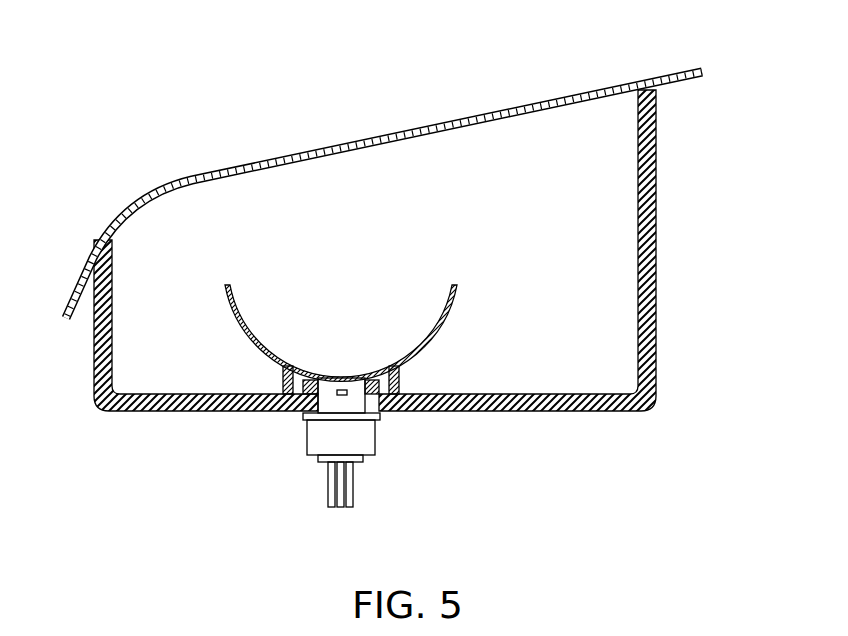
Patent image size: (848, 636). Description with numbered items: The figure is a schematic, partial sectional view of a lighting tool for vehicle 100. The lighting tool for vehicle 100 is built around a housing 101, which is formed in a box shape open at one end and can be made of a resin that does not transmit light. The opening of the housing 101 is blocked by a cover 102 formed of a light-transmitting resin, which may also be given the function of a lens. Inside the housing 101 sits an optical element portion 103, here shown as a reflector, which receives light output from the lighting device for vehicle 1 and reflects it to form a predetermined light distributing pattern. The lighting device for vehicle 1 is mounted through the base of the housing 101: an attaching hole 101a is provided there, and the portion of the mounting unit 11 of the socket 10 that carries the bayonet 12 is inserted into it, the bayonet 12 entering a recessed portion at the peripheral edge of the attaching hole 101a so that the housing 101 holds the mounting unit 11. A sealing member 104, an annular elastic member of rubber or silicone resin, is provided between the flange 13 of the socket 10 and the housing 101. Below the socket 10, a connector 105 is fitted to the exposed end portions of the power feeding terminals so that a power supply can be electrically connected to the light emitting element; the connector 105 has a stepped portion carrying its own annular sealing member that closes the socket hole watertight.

The lighting tool for vehicle 100 is at (728, 70).
The housing 101 is at (655, 302).
The attaching hole 101a is at (358, 399).
The cover 102 is at (257, 163).
The optical element portion 103 is at (245, 333).
The sealing member 104 is at (310, 412).
The connector 105 is at (350, 461).
The socket 10 is at (383, 431).
The mounting unit 11 is at (354, 387).
The bayonet 12 is at (318, 388).
The flange 13 is at (313, 421).
The lighting device for vehicle 1 is at (313, 466).